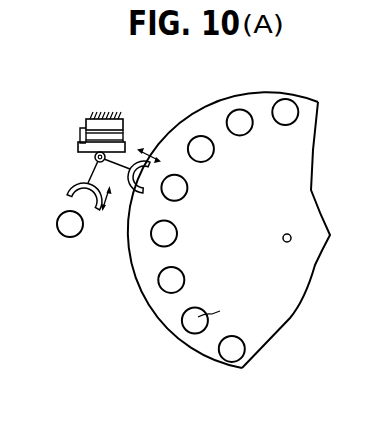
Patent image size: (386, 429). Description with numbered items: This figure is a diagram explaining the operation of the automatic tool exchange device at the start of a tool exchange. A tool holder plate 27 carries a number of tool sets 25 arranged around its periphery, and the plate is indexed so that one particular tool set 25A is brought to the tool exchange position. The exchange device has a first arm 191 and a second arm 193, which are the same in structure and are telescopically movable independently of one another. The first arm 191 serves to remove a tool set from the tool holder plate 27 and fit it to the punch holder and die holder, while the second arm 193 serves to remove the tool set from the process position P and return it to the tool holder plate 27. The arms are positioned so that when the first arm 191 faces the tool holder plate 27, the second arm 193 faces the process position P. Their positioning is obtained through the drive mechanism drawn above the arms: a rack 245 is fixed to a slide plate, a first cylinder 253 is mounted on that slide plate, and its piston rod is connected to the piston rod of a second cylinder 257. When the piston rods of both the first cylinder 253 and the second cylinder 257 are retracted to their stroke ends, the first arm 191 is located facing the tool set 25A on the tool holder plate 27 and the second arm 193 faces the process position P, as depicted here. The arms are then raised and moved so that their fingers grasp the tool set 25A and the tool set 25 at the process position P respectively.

The tool set 25 is at (239, 118).
The tool set 25A is at (182, 192).
The tool holder plate 27 is at (308, 107).
The first arm 191 is at (133, 158).
The second arm 193 is at (88, 177).
The rack 245 is at (78, 145).
The first cylinder 253 is at (126, 126).
The second cylinder 257 is at (101, 112).
The process position P is at (72, 237).